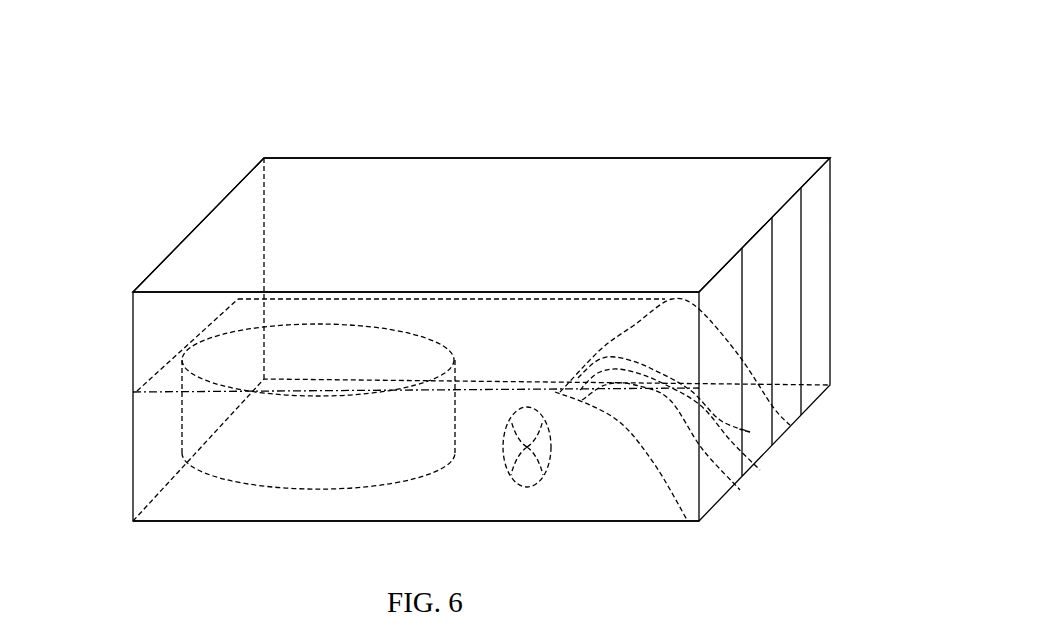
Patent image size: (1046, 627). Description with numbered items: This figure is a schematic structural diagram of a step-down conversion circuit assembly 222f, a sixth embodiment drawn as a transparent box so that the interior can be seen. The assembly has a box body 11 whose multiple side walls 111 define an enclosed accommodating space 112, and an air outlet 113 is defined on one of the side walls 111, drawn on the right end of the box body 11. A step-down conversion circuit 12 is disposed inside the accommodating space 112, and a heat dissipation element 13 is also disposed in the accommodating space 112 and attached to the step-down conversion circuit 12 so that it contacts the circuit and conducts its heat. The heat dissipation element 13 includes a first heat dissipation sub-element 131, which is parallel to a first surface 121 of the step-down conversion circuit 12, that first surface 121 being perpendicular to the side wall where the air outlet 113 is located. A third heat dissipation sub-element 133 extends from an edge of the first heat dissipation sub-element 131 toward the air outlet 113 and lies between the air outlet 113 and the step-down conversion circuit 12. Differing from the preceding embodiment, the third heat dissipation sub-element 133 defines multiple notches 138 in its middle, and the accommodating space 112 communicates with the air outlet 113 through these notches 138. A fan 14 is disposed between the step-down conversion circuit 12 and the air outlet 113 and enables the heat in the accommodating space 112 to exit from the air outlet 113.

The step-down conversion circuit assembly 222f is at (490, 94).
The box body 11 is at (630, 158).
The side walls 111 is at (290, 177).
The accommodating space 112 is at (603, 483).
The air outlet 113 is at (820, 293).
The step-down conversion circuit 12 is at (195, 415).
The first surface 121 is at (137, 391).
The heat dissipation element 13 is at (290, 306).
The first heat dissipation sub-element 131 is at (580, 337).
The third heat dissipation sub-element 133 is at (657, 350).
The notches 138 is at (703, 450).
The fan 14 is at (505, 452).